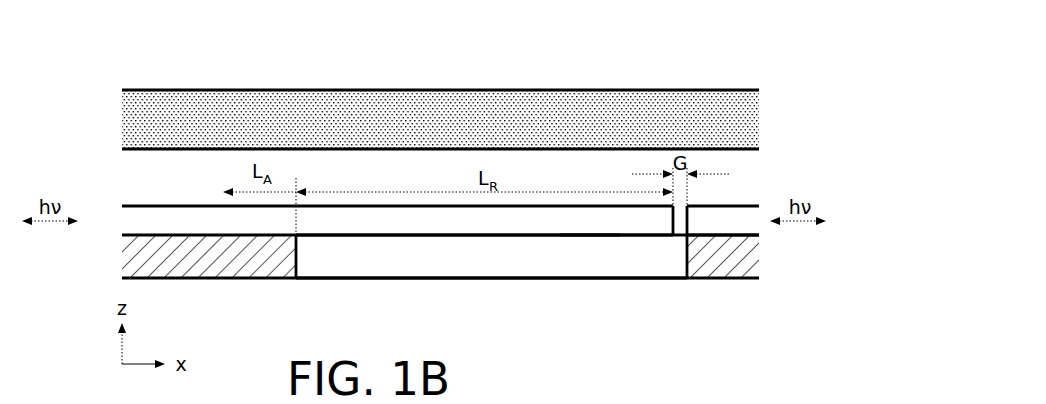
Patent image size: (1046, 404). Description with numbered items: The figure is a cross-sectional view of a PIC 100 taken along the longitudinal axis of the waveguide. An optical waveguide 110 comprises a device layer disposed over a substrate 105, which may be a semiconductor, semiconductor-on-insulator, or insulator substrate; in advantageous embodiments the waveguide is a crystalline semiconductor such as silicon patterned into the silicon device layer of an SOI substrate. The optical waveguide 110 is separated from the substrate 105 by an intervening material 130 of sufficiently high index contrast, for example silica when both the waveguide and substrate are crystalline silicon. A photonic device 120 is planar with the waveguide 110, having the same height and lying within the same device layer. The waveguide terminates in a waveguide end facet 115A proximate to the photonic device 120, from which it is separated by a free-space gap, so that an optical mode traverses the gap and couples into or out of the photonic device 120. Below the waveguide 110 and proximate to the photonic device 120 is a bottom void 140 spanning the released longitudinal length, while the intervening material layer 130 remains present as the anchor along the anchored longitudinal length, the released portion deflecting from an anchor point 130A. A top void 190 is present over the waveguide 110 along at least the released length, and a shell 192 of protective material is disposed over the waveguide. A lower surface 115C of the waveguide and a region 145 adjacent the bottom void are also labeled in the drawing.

The PIC 100 is at (154, 80).
The shell 192 is at (440, 119).
The top void 190 is at (445, 181).
The optical waveguide 110 is at (397, 220).
The waveguide end facet 115A is at (682, 235).
The bottom surface of waveguide core 115C is at (590, 237).
The photonic device 120 is at (723, 242).
The intervening material 130 is at (440, 256).
The anchor point 130A is at (298, 257).
The bottom void 140 is at (491, 256).
The substrate 105 is at (541, 305).
The gap region 145 is at (366, 310).